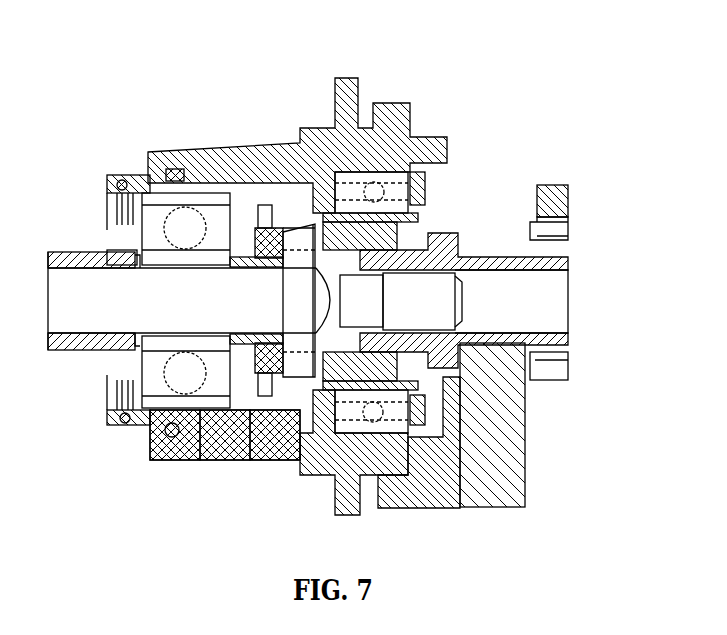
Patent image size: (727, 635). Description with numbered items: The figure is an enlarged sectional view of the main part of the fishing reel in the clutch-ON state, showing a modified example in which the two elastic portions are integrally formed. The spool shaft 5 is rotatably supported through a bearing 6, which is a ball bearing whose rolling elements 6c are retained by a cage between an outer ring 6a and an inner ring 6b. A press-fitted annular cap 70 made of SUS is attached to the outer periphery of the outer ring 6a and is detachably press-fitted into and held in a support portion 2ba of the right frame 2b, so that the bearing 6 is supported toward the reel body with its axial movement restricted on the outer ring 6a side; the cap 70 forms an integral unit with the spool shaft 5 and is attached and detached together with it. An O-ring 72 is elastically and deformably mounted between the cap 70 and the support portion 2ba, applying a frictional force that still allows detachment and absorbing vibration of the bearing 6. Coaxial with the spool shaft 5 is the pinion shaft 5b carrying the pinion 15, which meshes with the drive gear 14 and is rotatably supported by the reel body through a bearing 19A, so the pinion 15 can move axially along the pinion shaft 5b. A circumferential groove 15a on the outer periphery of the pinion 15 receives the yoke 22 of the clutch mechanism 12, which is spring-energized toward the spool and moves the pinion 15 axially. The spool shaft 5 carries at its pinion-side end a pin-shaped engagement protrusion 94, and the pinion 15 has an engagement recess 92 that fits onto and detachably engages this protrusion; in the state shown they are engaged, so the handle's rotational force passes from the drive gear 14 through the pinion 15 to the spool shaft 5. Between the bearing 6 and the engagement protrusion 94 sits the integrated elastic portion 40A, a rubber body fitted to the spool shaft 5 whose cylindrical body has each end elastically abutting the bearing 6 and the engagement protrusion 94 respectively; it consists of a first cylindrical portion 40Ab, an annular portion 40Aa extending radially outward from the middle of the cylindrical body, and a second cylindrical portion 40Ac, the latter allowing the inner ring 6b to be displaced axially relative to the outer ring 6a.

The spool shaft 5 is at (90, 287).
The pinion shaft 5b is at (550, 284).
The bearing 6 is at (188, 205).
The outer ring 6a is at (122, 178).
The inner ring 6b is at (112, 255).
The rolling elements 6c is at (120, 420).
The right frame 2b is at (352, 85).
The support portion 2ba is at (176, 168).
The clutch mechanism 12 is at (535, 435).
The drive gear 14 is at (560, 200).
The pinion 15 is at (555, 362).
The circumferential groove 15a is at (495, 250).
The bearing 19A is at (376, 186).
The yoke 22 is at (502, 385).
The integrated elastic portion 40A is at (270, 523).
The annular portion 40Aa is at (218, 440).
The first cylindrical portion 40Ab is at (262, 430).
The second cylindrical portion 40Ac is at (175, 448).
The cap 70 is at (112, 175).
The O-ring 72 is at (160, 438).
The engagement recess 92 is at (275, 262).
The engagement protrusion 94 is at (300, 255).